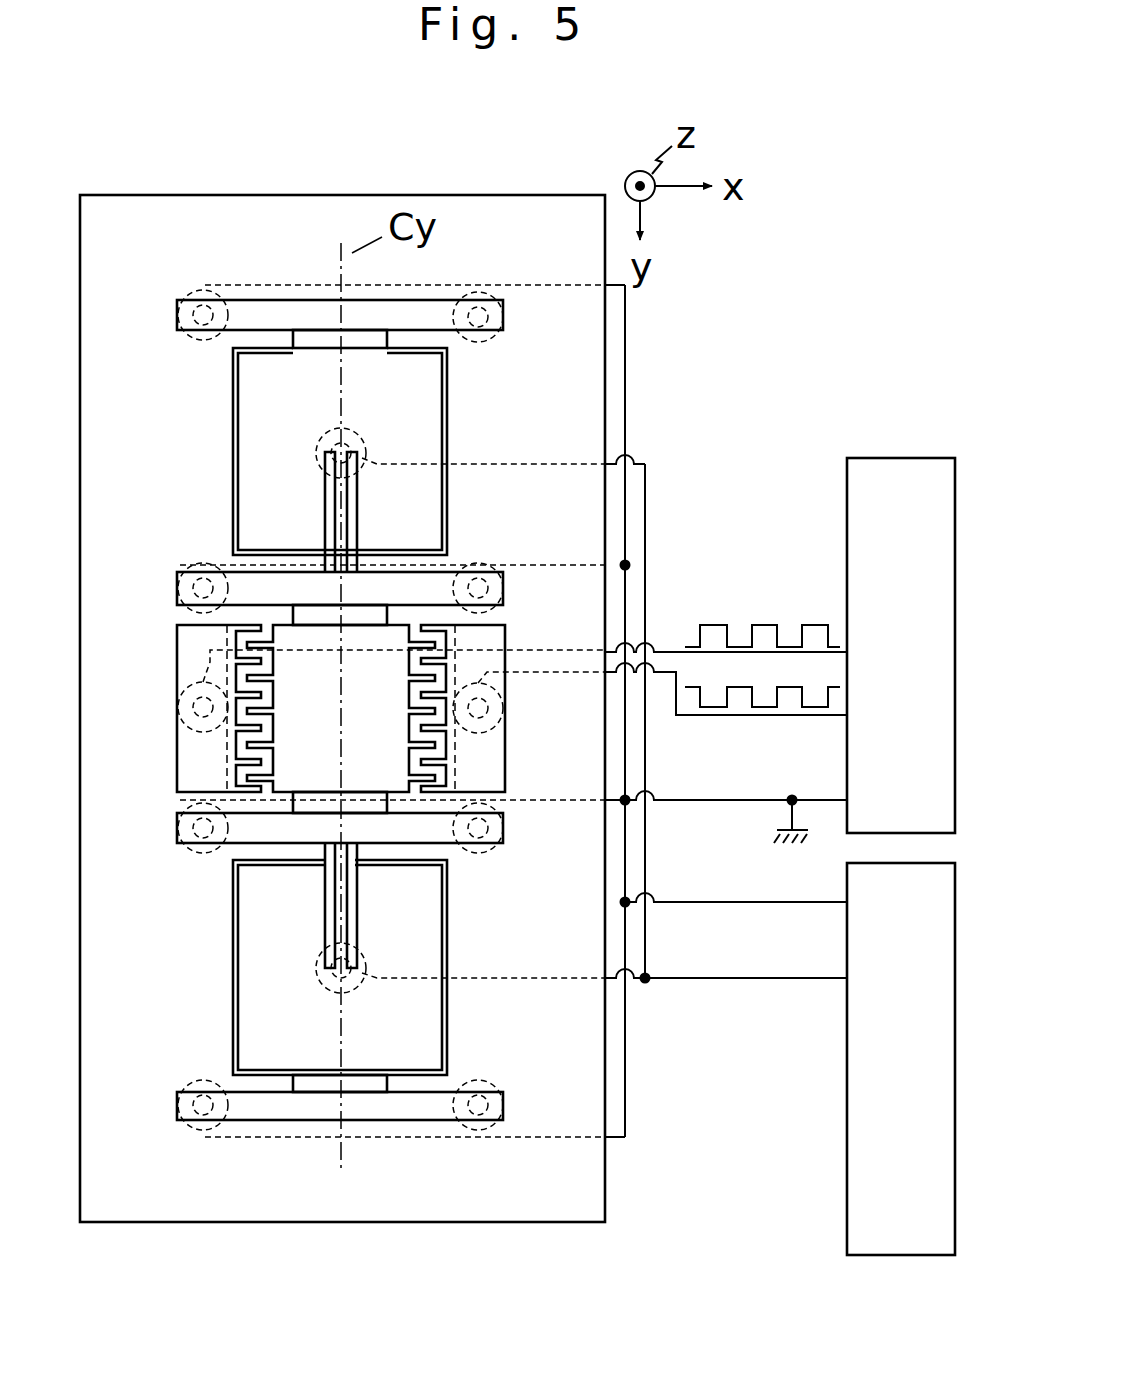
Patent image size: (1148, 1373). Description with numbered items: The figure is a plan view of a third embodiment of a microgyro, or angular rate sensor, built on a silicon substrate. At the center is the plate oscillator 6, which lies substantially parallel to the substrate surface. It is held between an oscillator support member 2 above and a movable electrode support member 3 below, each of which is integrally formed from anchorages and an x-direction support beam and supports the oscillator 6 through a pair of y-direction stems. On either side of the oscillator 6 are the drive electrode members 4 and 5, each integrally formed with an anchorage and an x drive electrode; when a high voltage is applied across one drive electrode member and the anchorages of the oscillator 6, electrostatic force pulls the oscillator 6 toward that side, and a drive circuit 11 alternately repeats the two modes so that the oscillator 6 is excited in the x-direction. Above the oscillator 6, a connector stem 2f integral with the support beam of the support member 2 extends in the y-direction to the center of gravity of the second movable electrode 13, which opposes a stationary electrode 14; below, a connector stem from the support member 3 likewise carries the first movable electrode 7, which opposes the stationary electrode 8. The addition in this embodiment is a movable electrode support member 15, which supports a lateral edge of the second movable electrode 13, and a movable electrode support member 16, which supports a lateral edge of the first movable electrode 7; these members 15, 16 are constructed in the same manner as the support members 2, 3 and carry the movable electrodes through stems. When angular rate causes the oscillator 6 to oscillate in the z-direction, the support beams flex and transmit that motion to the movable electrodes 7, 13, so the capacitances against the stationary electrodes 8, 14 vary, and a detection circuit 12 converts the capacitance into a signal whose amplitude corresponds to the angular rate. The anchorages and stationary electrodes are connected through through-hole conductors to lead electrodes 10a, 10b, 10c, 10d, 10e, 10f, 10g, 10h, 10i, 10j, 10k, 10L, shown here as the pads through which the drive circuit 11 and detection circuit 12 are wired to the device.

The oscillator support member 2 is at (260, 571).
The connector stem 2f is at (357, 538).
The movable electrode support member 3 is at (240, 846).
The drive electrode member 4 is at (176, 741).
The drive electrode member 5 is at (506, 678).
The plate oscillator 6 is at (332, 734).
The movable electrode 7 is at (300, 1044).
The stationary electrode 8 is at (450, 1022).
The lead electrode 10a is at (196, 565).
The lead electrode 10b is at (492, 606).
The lead electrode 10c is at (190, 690).
The lead electrode 10d is at (488, 730).
The lead electrode 10e is at (192, 806).
The lead electrode 10f is at (490, 850).
The lead electrode 10g is at (316, 966).
The electrode pad 10h is at (350, 432).
The electrode pad 10i is at (190, 290).
The electrode pad 10j is at (492, 336).
The electrode pad 10k is at (196, 1082).
The electrode pad 10L is at (480, 1135).
The drive circuit 11 is at (880, 458).
The detection circuit 12 is at (847, 1143).
The movable electrode 13 is at (296, 405).
The stationary electrode 14 is at (522, 403).
The movable electrode support member 15 is at (260, 299).
The movable electrode support member 16 is at (248, 1122).